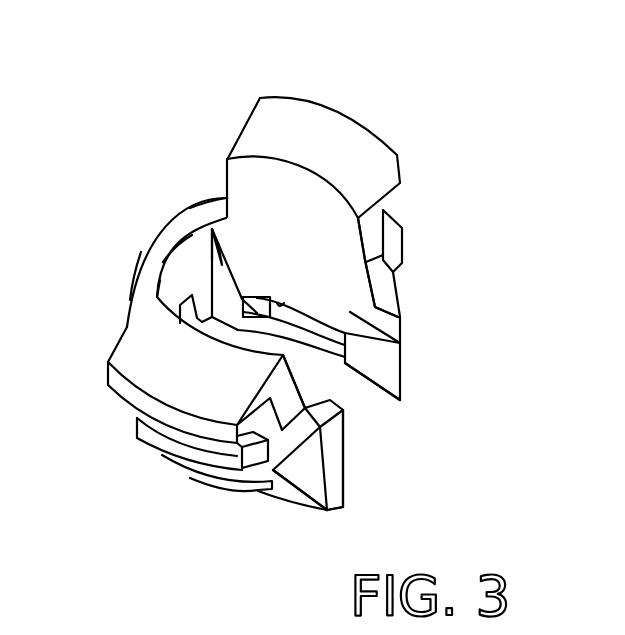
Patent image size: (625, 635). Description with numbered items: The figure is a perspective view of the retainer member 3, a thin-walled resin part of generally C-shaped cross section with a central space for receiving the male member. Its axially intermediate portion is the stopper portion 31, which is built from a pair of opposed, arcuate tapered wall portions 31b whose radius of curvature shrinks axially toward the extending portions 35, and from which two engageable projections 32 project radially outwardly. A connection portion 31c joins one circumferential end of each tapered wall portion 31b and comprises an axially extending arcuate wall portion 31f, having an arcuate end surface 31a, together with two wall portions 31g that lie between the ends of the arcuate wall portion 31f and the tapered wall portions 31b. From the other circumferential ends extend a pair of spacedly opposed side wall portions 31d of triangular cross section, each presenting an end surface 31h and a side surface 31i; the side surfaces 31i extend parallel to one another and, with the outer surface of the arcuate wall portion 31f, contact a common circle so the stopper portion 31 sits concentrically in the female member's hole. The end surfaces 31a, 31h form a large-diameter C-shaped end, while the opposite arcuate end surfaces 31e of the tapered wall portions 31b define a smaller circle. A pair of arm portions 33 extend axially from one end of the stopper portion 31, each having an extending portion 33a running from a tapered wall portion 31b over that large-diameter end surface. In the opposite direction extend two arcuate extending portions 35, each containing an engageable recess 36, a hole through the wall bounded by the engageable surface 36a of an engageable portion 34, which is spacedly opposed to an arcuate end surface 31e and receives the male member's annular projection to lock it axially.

The retainer member 3 is at (375, 105).
The stopper portion 31 is at (187, 190).
The arcuate end surface 31a is at (154, 267).
The tapered wall portion 31b is at (400, 343).
The connection portion 31c is at (168, 205).
The side wall portion 31d is at (388, 320).
The arcuate end surface 31e is at (273, 297).
The arcuate wall portion 31f is at (157, 262).
The wall portion 31g is at (212, 200).
The end surface 31h is at (390, 287).
The side surface 31i is at (400, 368).
The engageable projection 32 is at (392, 250).
The arm portion 33 is at (395, 133).
The extending portion 33a is at (373, 233).
The engageable portion 34 is at (200, 483).
The extending portion 35 is at (318, 370).
The engageable recess 36 is at (308, 312).
The engageable surface 36a is at (177, 273).